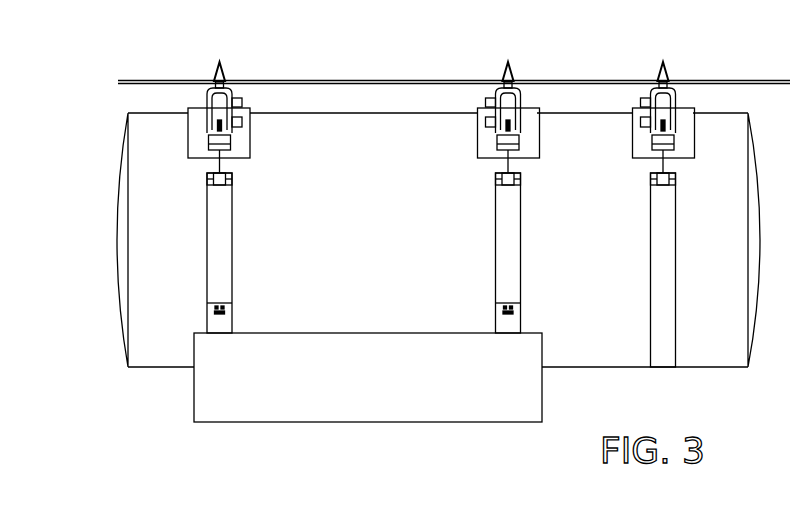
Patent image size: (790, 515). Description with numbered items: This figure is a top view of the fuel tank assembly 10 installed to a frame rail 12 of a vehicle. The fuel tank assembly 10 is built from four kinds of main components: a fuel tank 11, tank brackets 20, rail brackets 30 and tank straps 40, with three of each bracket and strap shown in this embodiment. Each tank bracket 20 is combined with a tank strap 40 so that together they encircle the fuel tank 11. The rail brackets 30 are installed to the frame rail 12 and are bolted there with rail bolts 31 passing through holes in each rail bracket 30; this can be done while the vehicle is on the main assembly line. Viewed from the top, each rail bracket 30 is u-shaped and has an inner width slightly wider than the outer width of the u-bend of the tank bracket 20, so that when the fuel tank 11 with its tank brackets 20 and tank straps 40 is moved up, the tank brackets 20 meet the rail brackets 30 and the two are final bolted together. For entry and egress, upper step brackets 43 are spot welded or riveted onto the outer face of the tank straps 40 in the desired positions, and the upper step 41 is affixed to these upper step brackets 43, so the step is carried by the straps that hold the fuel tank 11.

The fuel tank assembly 10 is at (51, 310).
The fuel tank 11 is at (157, 244).
The frame rail 12 is at (152, 80).
The tank bracket 20 is at (256, 133).
The rail bracket 30 is at (202, 94).
The rail bolt 31 is at (223, 66).
The tank strap 40 is at (223, 243).
The upper step 41 is at (341, 396).
The upper step bracket 43 is at (227, 323).